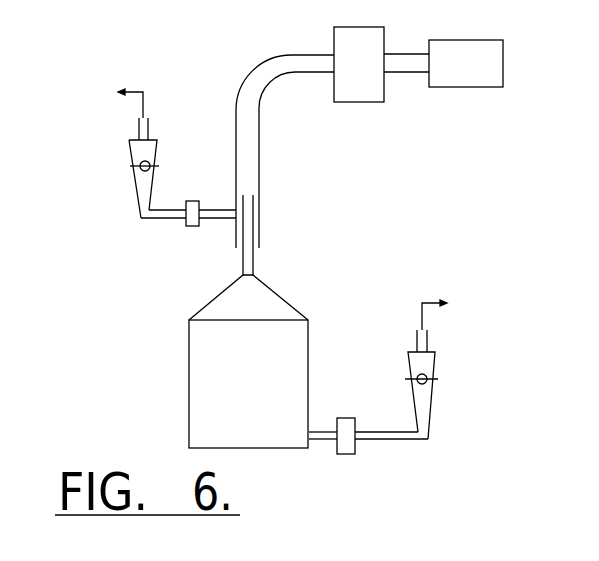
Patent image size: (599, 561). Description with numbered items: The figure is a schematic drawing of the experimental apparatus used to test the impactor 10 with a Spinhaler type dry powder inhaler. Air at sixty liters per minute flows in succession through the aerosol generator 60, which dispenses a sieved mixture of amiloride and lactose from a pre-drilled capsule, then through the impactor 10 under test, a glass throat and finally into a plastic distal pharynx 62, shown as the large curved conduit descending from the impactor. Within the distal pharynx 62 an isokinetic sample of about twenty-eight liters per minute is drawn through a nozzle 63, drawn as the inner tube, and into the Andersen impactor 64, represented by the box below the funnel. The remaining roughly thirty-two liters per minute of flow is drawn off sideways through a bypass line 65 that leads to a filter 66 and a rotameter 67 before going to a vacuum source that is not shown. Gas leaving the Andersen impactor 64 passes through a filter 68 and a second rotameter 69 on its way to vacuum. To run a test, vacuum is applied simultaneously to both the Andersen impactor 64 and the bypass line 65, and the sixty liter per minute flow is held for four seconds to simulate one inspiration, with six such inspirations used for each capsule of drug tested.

The impactor 10 is at (377, 77).
The aerosol generator 60 is at (484, 76).
The distal pharynx 62 is at (332, 151).
The nozzle 63 is at (243, 265).
The Andersen impactor 64 is at (204, 361).
The bypass line 65 is at (188, 190).
The filter 66 is at (185, 224).
The rotameter 67 is at (117, 160).
The filter 68 is at (384, 455).
The second rotameter 69 is at (459, 369).